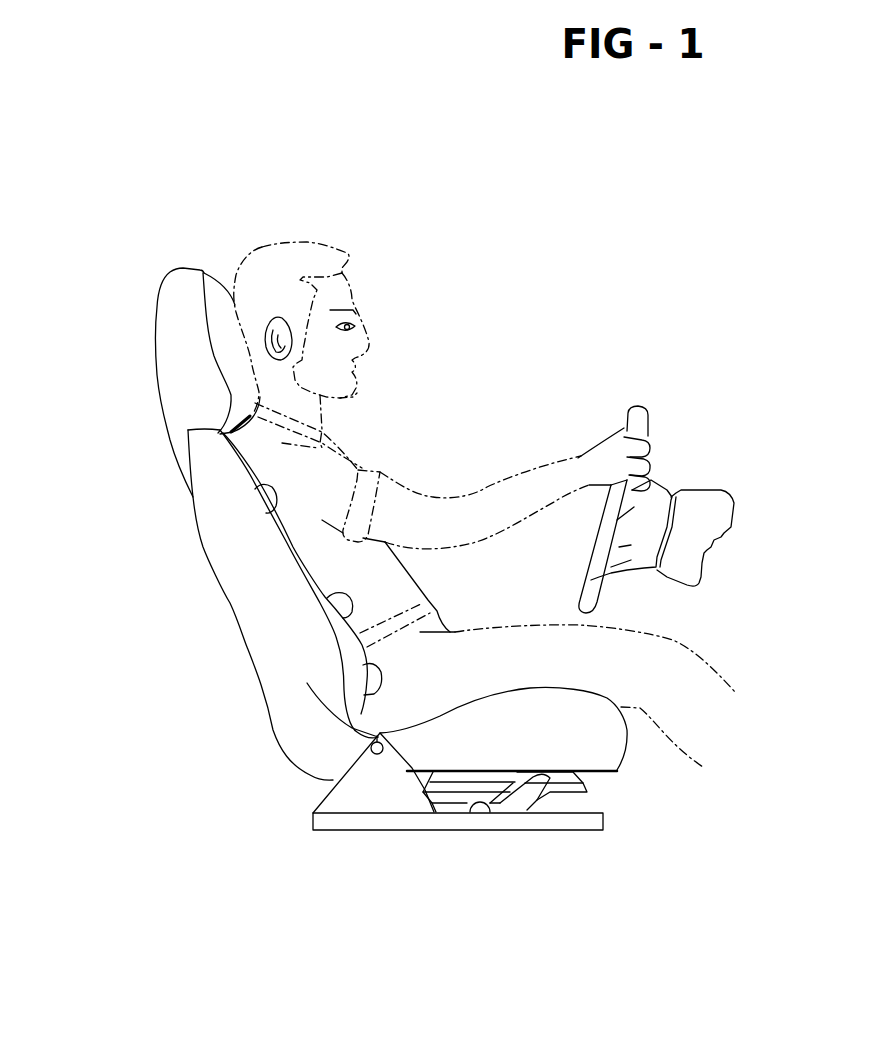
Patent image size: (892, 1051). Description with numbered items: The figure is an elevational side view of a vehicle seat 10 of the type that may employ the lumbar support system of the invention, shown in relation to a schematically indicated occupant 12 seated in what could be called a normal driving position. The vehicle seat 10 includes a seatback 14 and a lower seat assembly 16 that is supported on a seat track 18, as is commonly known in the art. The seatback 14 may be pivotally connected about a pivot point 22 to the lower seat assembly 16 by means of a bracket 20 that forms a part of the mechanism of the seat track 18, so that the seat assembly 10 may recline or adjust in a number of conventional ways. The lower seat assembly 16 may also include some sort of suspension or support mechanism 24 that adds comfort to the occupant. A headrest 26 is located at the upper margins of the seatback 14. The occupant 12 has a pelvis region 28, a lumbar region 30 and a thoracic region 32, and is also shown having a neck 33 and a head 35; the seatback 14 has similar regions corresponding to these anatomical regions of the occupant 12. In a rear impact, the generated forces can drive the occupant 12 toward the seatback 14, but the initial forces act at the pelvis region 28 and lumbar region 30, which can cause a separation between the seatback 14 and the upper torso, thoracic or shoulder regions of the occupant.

The vehicle seat 10 is at (232, 699).
The occupant 12 is at (393, 440).
The seatback 14 is at (232, 609).
The lower seat assembly 16 is at (627, 748).
The seat track 18 is at (480, 832).
The bracket 20 is at (337, 792).
The pivot point 22 is at (381, 732).
The suspension or support mechanism 24 is at (577, 773).
The headrest 26 is at (183, 277).
The pelvis region 28 is at (367, 697).
The lumbar region 30 is at (328, 600).
The thoracic region 32 is at (258, 489).
The neck 33 is at (260, 396).
The head 35 is at (353, 303).